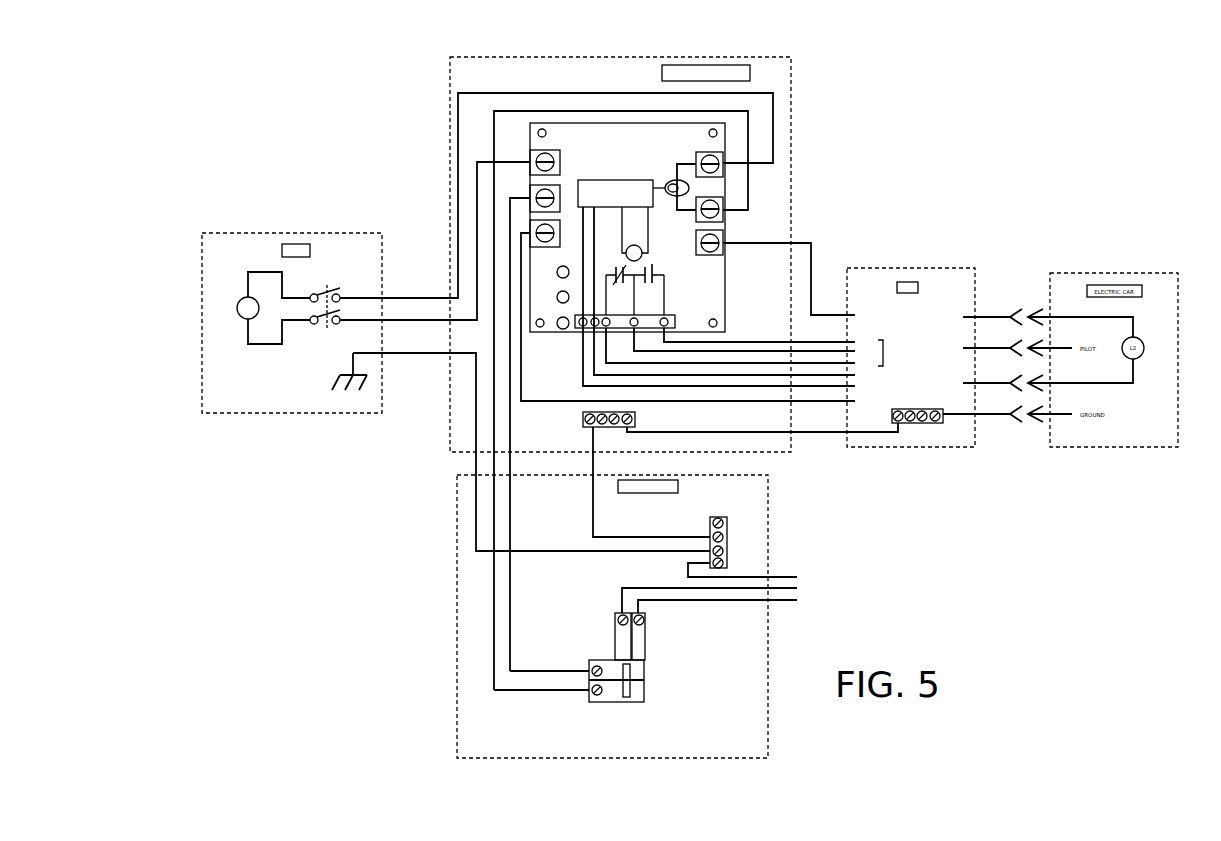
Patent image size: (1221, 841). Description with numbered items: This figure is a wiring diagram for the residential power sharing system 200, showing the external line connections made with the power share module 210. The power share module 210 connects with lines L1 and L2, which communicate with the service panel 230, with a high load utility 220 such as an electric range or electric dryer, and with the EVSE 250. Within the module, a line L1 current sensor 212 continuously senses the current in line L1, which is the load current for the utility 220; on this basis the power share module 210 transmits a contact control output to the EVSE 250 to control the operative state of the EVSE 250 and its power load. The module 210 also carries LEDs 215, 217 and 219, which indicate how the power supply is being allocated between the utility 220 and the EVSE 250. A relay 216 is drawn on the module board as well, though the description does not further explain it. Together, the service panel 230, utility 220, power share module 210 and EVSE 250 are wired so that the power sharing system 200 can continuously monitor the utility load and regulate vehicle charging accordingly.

The power sharing system 200 is at (398, 88).
The power share module 210 is at (791, 80).
The current sensor 212 is at (640, 180).
The LED 215 is at (557, 272).
The relay RL1 216 is at (642, 256).
The LED 217 is at (557, 297).
The LED 219 is at (562, 330).
The high load utility 220 is at (262, 233).
The service panel 230 is at (768, 493).
The EVSE 250 is at (905, 268).